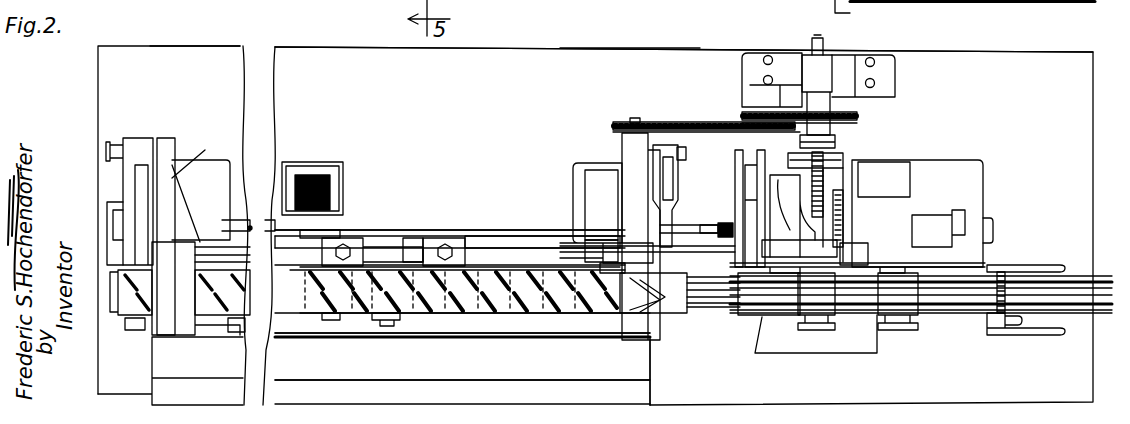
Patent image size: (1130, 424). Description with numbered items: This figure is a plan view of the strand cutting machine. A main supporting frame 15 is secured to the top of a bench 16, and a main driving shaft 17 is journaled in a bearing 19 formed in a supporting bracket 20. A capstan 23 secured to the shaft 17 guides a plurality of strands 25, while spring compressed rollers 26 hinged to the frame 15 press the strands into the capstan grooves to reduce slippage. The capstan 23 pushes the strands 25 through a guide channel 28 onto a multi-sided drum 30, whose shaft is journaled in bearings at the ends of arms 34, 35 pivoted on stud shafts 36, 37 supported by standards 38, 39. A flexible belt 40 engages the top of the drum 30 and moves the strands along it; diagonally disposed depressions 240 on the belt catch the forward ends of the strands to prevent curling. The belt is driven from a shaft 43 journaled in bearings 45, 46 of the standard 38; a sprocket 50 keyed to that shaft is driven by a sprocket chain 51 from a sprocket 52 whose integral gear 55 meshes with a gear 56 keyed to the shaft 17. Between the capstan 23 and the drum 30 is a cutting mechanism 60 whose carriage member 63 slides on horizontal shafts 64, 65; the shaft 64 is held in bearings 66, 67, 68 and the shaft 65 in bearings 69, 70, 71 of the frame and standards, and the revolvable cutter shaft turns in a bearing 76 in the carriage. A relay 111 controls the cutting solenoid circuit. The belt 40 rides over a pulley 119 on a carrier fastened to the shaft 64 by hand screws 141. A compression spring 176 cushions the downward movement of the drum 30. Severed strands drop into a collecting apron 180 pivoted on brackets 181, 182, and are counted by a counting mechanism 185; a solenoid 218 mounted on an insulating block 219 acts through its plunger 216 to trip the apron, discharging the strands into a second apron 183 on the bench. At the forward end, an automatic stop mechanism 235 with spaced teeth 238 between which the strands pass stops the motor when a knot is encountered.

The main supporting frame 15 is at (938, 143).
The bench 16 is at (588, 5).
The main driving shaft 17 is at (816, 40).
The bearing 19 is at (836, 72).
The supporting bracket 20 is at (866, 86).
The capstan 23 is at (820, 302).
The strands 25 is at (696, 318).
The spring compressed rollers 26 is at (887, 305).
The guide channel 28 is at (768, 328).
The multi-sided drum 30 is at (496, 333).
The arm 34 is at (697, 205).
The arm 35 is at (112, 175).
The stud shaft 36 is at (672, 152).
The stud shaft 37 is at (110, 150).
The standard 38 is at (615, 165).
The standard 39 is at (205, 124).
The flexible belt 40 is at (352, 318).
The shaft 43 is at (636, 120).
The bearing 45 is at (655, 340).
The bearing 46 is at (632, 180).
The sprocket 50 is at (652, 123).
The sprocket chain 51 is at (688, 153).
The sprocket 52 is at (785, 135).
The gear 55 is at (742, 104).
The gear 56 is at (832, 128).
The cutting mechanism 60 is at (734, 172).
The carriage member 63 is at (843, 208).
The horizontal shaft 64 is at (420, 250).
The horizontal shaft 65 is at (462, 228).
The bearing 66 is at (862, 262).
The bearing 67 is at (615, 195).
The bearing 68 is at (195, 250).
The bearing 69 is at (995, 216).
The bearing 70 is at (563, 218).
The bearing 71 is at (215, 222).
The bearing 76 is at (775, 230).
The relay 111 is at (847, 163).
The pulley 119 is at (382, 320).
The hand screws 141 is at (412, 255).
The compression spring 176 is at (130, 320).
The collecting apron 180 is at (545, 372).
The bracket 181 is at (618, 0).
The bracket 182 is at (193, 26).
The second apron 183 is at (647, 392).
The counting mechanism 185 is at (941, 213).
The plunger 216 is at (322, 232).
The solenoid 218 is at (318, 162).
The insulating block 219 is at (343, 200).
The automatic stop mechanism 235 is at (1072, 218).
The teeth 238 is at (1030, 255).
The diagonally disposed depressions 240 is at (520, 290).